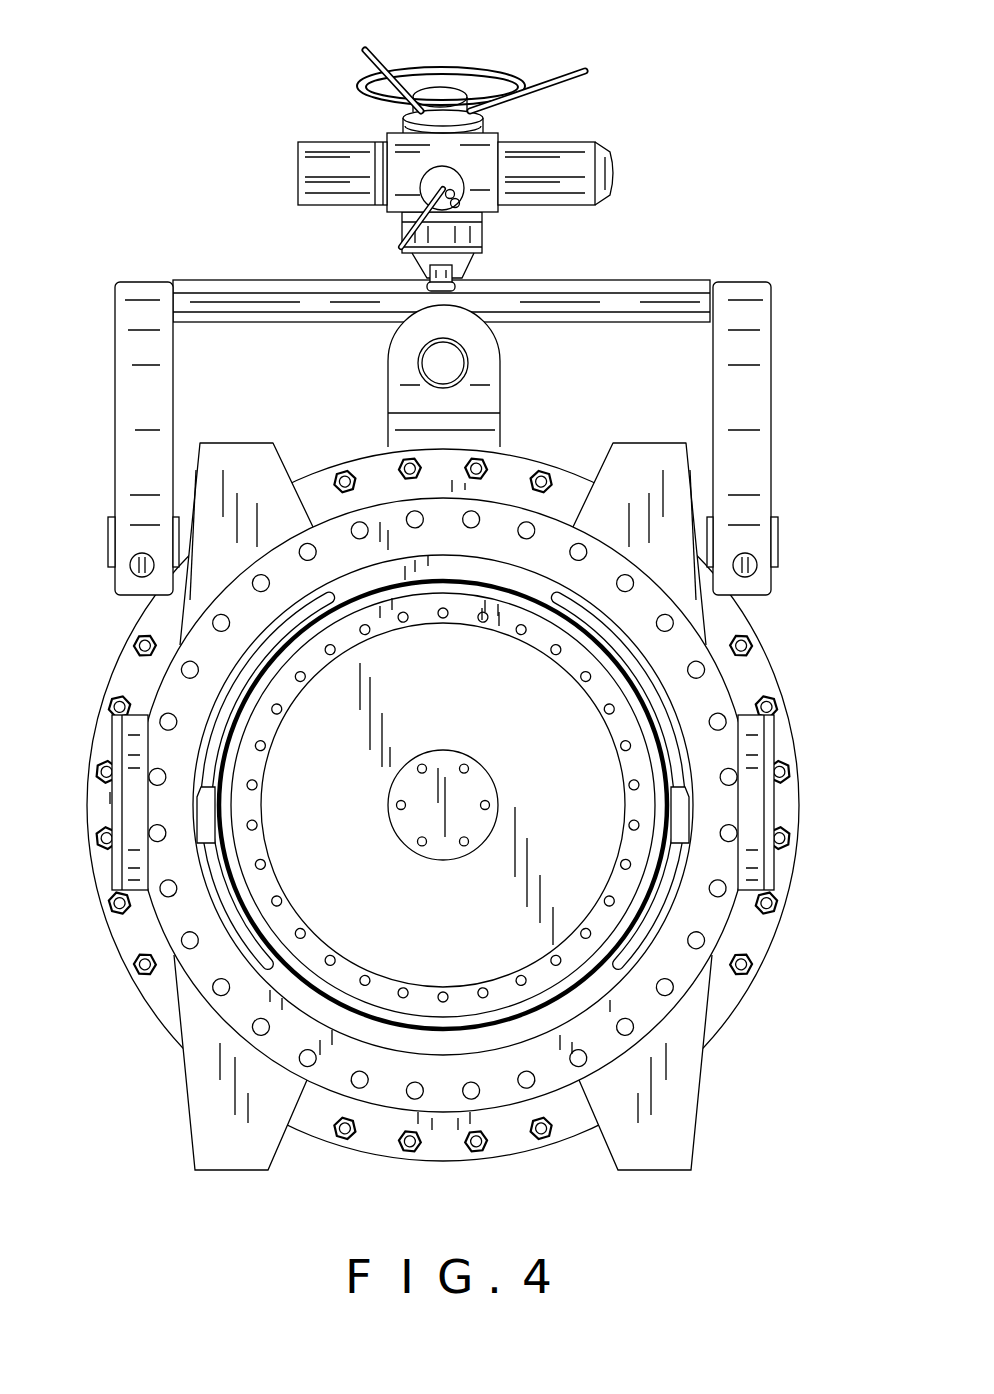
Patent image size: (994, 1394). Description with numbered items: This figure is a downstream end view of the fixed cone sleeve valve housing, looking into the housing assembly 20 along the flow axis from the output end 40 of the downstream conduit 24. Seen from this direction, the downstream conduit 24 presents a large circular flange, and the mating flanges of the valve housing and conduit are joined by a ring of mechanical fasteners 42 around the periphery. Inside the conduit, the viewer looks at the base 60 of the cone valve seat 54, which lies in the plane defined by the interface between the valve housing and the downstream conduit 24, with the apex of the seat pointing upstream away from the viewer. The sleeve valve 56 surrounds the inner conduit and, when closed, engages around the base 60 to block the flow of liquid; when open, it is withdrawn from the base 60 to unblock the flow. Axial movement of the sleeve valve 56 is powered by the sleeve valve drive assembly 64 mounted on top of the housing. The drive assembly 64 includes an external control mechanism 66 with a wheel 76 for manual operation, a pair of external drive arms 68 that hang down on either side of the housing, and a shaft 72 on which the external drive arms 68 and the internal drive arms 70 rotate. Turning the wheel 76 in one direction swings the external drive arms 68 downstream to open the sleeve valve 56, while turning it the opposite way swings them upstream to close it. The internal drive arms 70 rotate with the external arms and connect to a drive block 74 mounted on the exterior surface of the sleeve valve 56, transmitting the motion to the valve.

The housing assembly 20 is at (786, 634).
The downstream conduit 24 is at (197, 985).
The output end 40 is at (266, 964).
The mechanical fasteners 42 is at (778, 930).
The cone valve seat 54 is at (412, 905).
The sleeve valve 56 is at (220, 893).
The base 60 is at (465, 1027).
The sleeve valve drive assembly 64 is at (612, 125).
The external control mechanism 66 is at (338, 152).
The external drive arms 68 is at (112, 345).
The internal drive arms 70 is at (217, 715).
The shaft 72 is at (108, 545).
The drive block 74 is at (214, 847).
The wheel 76 is at (492, 70).